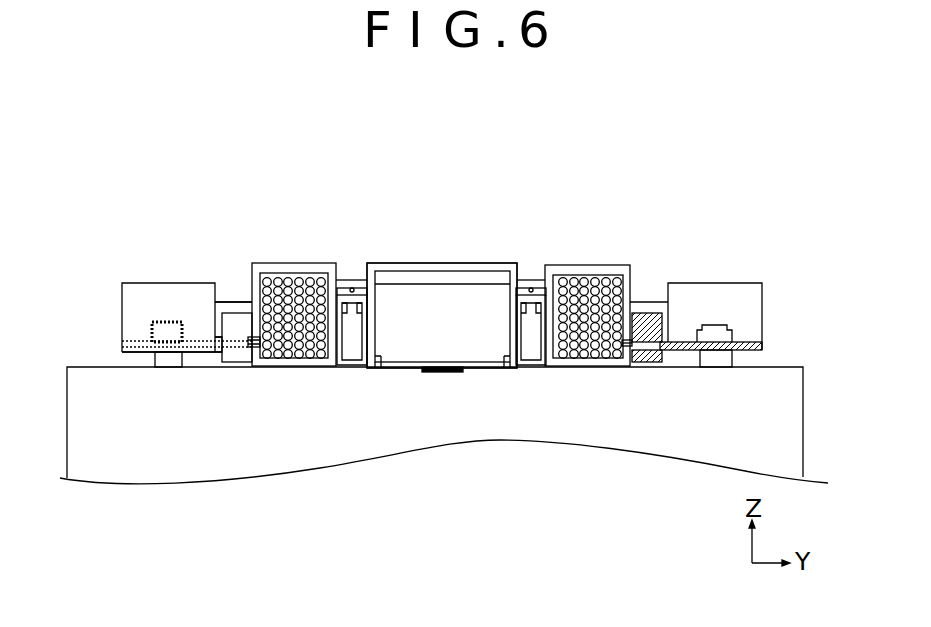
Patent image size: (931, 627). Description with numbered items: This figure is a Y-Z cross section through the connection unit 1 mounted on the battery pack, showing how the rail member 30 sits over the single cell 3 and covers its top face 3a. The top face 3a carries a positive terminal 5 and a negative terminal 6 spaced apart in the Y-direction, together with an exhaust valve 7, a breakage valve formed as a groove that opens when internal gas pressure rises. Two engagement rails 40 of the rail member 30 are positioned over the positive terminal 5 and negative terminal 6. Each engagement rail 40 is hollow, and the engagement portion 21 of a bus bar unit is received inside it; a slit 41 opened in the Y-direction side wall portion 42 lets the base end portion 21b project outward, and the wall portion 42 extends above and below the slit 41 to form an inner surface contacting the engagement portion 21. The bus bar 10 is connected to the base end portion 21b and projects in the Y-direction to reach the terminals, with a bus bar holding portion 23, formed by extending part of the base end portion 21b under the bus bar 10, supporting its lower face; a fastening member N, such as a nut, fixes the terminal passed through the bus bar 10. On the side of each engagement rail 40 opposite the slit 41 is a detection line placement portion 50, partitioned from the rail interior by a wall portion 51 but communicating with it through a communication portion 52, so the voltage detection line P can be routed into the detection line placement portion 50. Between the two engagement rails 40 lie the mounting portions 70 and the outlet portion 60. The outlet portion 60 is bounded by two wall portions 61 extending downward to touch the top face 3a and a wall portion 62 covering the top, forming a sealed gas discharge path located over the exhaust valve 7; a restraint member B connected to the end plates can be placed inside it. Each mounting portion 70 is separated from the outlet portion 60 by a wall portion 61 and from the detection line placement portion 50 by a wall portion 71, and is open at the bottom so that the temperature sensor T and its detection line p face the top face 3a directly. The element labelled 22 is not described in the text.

The connection unit 1 is at (386, 261).
The rail member 30 is at (442, 315).
The single cell 3 is at (805, 378).
The top face 3a is at (476, 368).
The positive terminal 5 is at (727, 360).
The negative terminal 6 is at (162, 368).
The exhaust valve 7 is at (443, 372).
The bus bar 10 is at (135, 343).
The engagement portion 21 is at (236, 316).
The base end portion 21b is at (648, 318).
The resin 22 is at (158, 282).
The bus bar holding portion 23 is at (130, 352).
The engagement rail 40 is at (220, 362).
The slit 41 is at (212, 362).
The wall portion 42 is at (218, 328).
The detection line placement portion 50 is at (303, 273).
The wall portion 51 is at (255, 284).
The communication portion 52 is at (255, 352).
The outlet portion 60 is at (459, 318).
The wall portion 61 is at (372, 336).
The wall portion 62 is at (462, 269).
The mounting portion 70 is at (342, 287).
The wall portion 71 is at (329, 352).
The restraint member B is at (433, 277).
The fastening member N is at (150, 325).
The voltage detection line P is at (273, 287).
The detection line p is at (352, 287).
The temperature sensor T is at (353, 367).